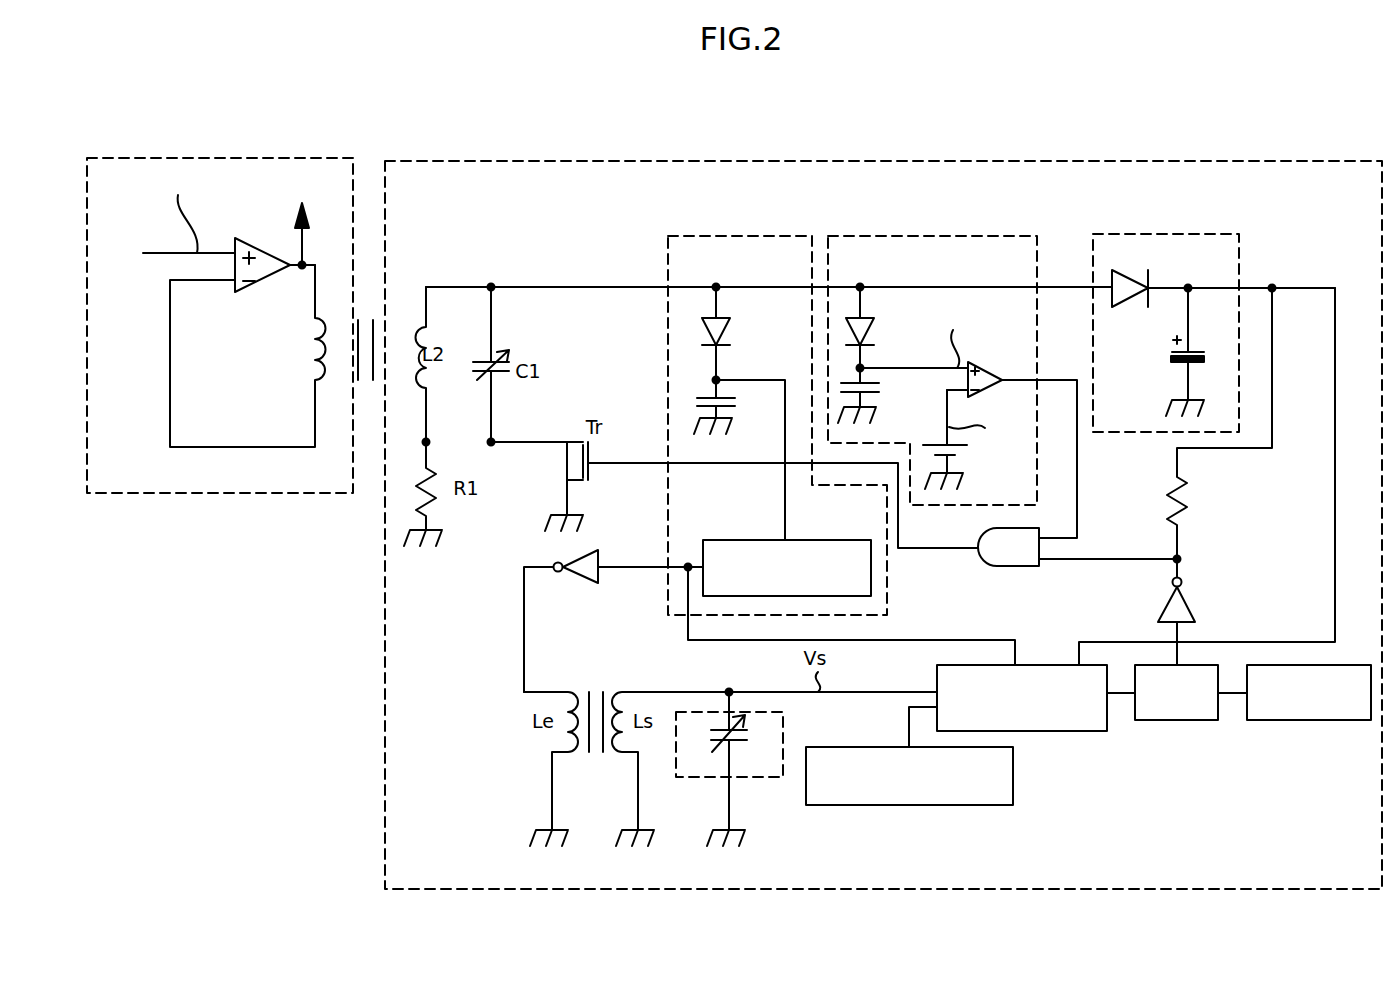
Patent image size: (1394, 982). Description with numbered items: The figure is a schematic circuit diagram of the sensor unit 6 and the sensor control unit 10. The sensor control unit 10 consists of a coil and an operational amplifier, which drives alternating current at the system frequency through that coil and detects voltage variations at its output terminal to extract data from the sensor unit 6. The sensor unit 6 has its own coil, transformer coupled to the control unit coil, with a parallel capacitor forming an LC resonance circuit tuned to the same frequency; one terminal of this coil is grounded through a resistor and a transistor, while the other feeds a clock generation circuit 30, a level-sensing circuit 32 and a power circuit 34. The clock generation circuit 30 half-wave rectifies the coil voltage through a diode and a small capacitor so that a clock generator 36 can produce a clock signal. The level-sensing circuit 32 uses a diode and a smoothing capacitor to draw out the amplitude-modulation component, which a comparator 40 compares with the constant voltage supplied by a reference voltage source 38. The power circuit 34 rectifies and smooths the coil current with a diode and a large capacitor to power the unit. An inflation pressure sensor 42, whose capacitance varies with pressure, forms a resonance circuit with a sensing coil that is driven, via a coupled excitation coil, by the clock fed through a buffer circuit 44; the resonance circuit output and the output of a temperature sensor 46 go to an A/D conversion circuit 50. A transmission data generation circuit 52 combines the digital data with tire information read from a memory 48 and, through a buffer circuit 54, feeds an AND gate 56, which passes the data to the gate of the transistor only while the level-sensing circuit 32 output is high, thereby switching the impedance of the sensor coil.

The sensor control unit 10 is at (202, 158).
The sensor unit 6 is at (1258, 161).
The clock generation circuit 30 is at (716, 236).
The level-sensing circuit 32 is at (868, 236).
The power circuit 34 is at (1172, 234).
The clock generator 36 is at (760, 540).
The reference voltage source 38 is at (962, 452).
The comparator 40 is at (1000, 373).
The inflation pressure sensor 42 is at (783, 735).
The buffer circuit 44 is at (582, 583).
The temperature sensor 46 is at (1013, 796).
The memory 48 is at (1293, 720).
The A/D conversion circuit 50 is at (1058, 731).
The transmission data generation circuit 52 is at (1182, 720).
The buffer circuit 54 is at (1185, 602).
The AND gate 56 is at (1017, 567).